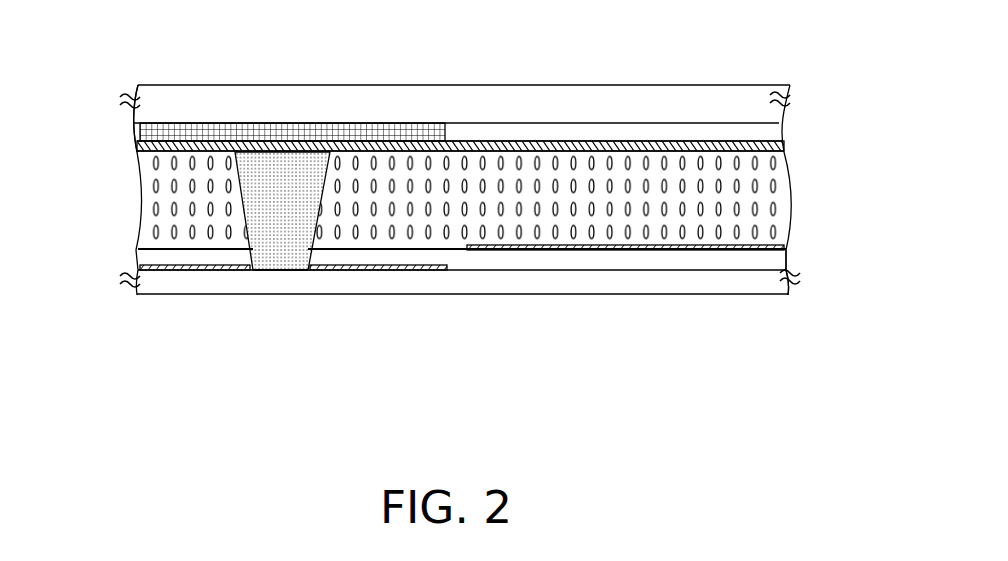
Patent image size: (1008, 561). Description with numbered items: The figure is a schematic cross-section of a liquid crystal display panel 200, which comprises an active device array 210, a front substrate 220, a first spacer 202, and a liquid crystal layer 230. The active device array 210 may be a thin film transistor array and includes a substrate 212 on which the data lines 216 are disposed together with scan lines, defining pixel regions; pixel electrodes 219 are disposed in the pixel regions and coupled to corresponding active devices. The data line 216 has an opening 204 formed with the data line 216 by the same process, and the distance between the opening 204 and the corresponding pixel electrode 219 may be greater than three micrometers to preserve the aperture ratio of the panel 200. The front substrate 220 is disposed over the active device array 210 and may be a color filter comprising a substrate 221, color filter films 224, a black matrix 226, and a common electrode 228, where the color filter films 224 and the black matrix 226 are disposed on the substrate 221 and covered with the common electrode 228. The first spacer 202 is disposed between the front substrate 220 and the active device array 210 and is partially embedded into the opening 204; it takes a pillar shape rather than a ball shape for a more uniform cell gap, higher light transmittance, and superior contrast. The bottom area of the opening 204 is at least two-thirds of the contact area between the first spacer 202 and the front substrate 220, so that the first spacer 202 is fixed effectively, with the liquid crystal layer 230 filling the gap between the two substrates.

The liquid crystal display panel 200 is at (782, 330).
The first spacer 202 is at (252, 165).
The opening 204 is at (261, 261).
The active device array 210 is at (803, 245).
The substrate 212 is at (140, 287).
The data line 216 is at (142, 267).
The pixel electrode 219 is at (515, 251).
The front substrate 220 is at (117, 87).
The substrate 221 is at (787, 92).
The color filter film 224 is at (778, 132).
The black matrix 226 is at (382, 129).
The common electrode 228 is at (787, 147).
The liquid crystal layer 230 is at (142, 182).